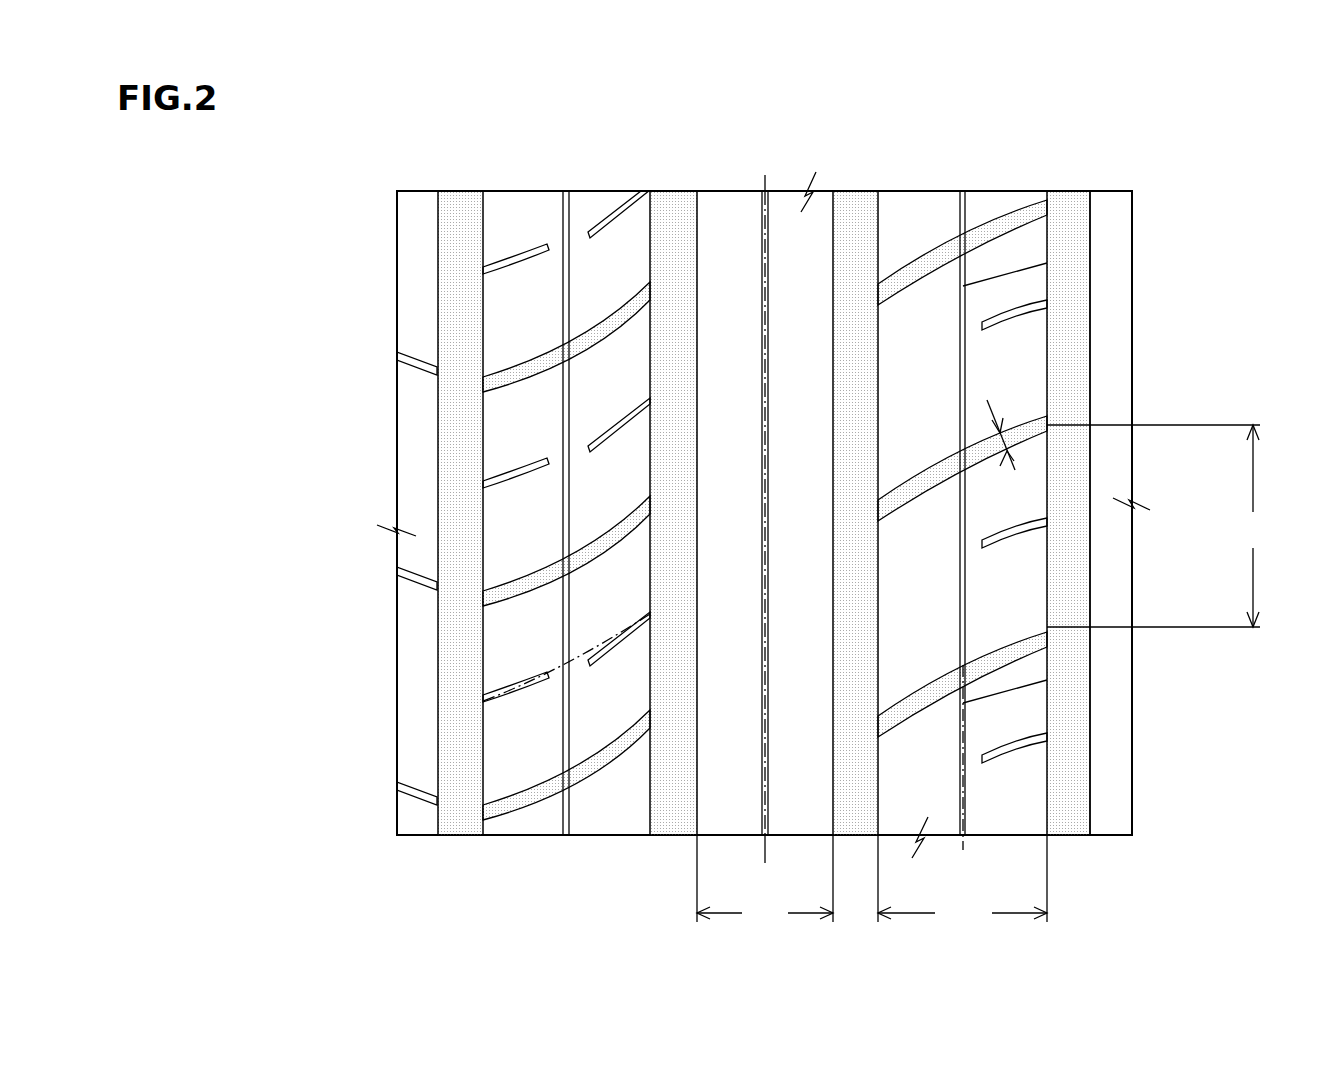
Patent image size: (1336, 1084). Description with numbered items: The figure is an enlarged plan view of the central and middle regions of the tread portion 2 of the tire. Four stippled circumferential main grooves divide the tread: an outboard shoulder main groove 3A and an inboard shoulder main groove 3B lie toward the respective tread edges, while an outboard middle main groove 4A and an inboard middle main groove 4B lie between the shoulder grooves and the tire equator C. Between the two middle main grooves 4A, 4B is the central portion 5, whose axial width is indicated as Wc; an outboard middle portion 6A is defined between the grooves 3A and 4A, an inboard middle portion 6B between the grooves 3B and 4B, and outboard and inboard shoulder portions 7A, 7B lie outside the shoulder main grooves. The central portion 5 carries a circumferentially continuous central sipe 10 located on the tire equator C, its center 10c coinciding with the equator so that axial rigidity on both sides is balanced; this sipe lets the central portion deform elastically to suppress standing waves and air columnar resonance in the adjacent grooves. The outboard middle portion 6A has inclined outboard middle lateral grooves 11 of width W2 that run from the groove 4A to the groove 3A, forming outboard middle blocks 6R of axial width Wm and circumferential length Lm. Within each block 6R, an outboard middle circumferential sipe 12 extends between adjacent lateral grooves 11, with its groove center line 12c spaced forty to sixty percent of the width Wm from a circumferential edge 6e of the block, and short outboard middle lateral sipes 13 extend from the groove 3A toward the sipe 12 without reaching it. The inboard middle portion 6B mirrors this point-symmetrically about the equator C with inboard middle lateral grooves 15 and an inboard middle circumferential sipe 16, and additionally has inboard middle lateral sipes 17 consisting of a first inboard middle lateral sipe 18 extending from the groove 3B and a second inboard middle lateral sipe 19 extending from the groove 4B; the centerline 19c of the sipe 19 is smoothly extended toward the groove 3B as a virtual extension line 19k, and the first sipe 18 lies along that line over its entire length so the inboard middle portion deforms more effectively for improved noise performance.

The pneumatic tire tread portion 2 is at (1189, 188).
The outboard shoulder main groove 3A is at (1063, 240).
The inboard shoulder main groove 3B is at (457, 232).
The outboard middle main groove 4A is at (852, 235).
The inboard middle main groove 4B is at (672, 240).
The central portion 5 is at (733, 245).
The outboard middle portion 6A is at (905, 235).
The inboard middle portion 6B is at (528, 232).
The outboard shoulder portion 7A is at (1113, 233).
The inboard shoulder portion 7B is at (423, 278).
The central sipe 10 is at (786, 491).
The center of center narrow groove 10c is at (763, 752).
The outboard middle lateral grooves 11 is at (1003, 217).
The outboard middle circumferential sipes 12 is at (1047, 263).
The groove center line 12c is at (963, 783).
The outboard middle lateral sipes 13 is at (1005, 320).
The inboard middle lateral grooves 15 is at (535, 800).
The inboard middle circumferential sipes 16 is at (567, 723).
The inboard middle lateral sipes 17 is at (438, 443).
The first inboard middle lateral sipe 18 is at (520, 470).
The second inboard middle lateral sipe 19 is at (613, 418).
The centerline 19c is at (607, 657).
The virtual extension line 19k is at (560, 672).
The circumferential edges 6e is at (880, 762).
The outboard middle blocks 6R is at (1015, 365).
The tire equator C is at (768, 232).
The width of outboard middle lateral groove W2 is at (1005, 428).
The circumferential length of outboard middle block Lm is at (1159, 526).
The width of center land portion Wc is at (765, 881).
The axial width of outboard middle blocks Wm is at (962, 881).